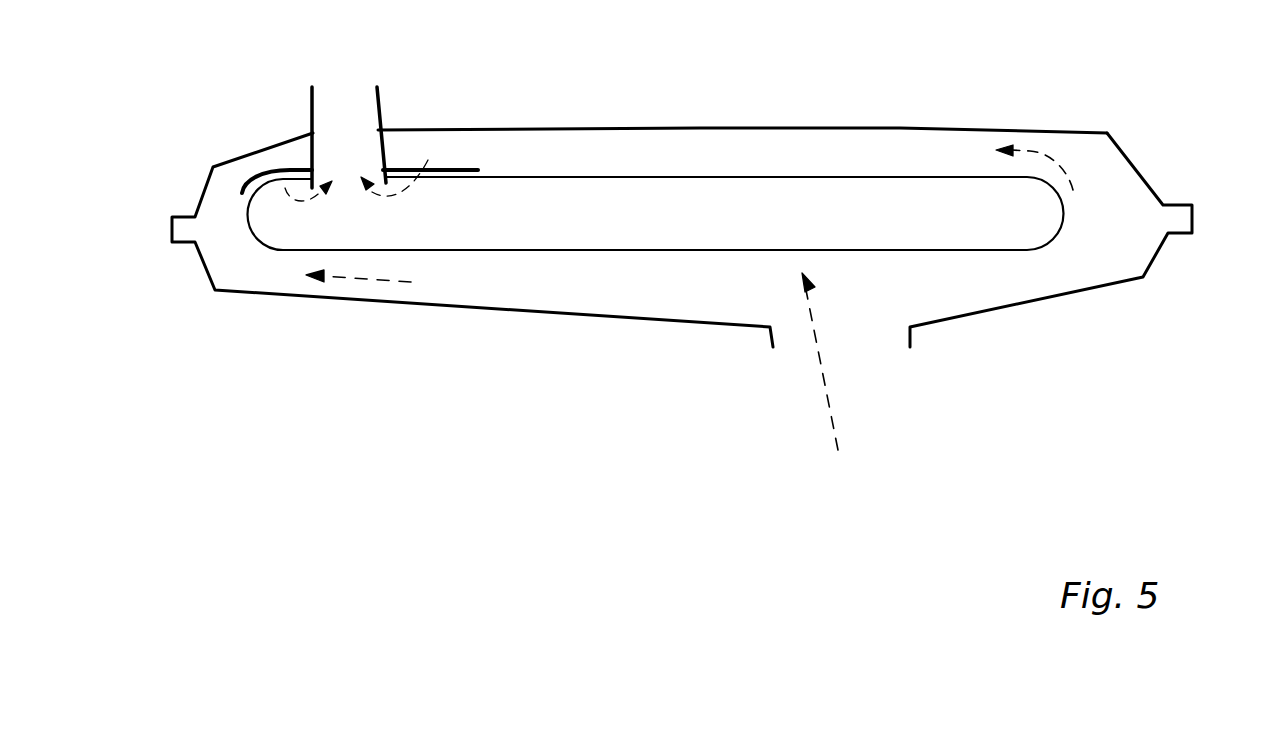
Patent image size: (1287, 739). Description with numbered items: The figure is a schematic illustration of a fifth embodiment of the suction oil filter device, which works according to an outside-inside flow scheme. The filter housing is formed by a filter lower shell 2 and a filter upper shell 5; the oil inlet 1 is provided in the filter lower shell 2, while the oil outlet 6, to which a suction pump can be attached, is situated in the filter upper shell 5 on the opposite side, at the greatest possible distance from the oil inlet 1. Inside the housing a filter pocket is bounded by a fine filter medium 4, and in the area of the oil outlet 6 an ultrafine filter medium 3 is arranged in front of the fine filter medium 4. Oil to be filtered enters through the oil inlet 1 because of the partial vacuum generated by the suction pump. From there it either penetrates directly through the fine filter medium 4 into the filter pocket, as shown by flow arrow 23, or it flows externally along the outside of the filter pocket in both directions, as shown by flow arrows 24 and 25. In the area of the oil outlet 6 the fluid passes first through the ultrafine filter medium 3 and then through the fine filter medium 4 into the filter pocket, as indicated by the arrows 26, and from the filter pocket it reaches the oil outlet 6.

The oil inlet 1 is at (719, 274).
The filter lower shell 2 is at (1073, 297).
The ultrafine filter medium 3 is at (460, 168).
The fine filter medium 4 is at (640, 174).
The filter upper shell 5 is at (1052, 130).
The oil outlet 6 is at (378, 97).
The flow arrow 23 is at (842, 418).
The flow arrow 24 is at (410, 286).
The flow arrow 25 is at (1077, 175).
The arrows 26 is at (272, 163).